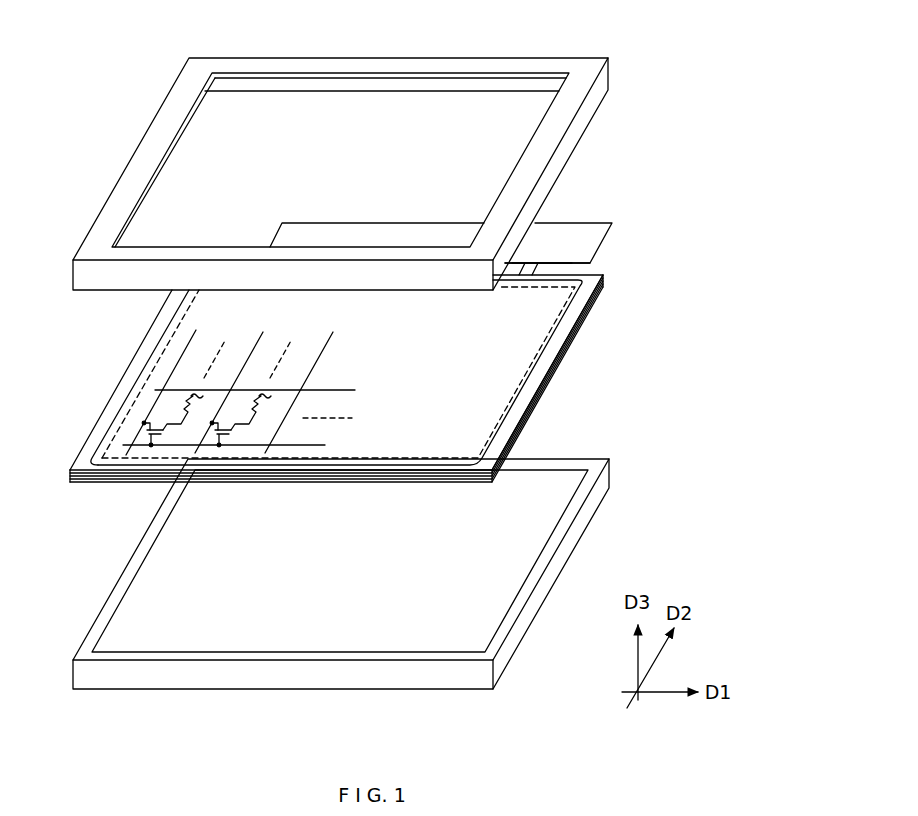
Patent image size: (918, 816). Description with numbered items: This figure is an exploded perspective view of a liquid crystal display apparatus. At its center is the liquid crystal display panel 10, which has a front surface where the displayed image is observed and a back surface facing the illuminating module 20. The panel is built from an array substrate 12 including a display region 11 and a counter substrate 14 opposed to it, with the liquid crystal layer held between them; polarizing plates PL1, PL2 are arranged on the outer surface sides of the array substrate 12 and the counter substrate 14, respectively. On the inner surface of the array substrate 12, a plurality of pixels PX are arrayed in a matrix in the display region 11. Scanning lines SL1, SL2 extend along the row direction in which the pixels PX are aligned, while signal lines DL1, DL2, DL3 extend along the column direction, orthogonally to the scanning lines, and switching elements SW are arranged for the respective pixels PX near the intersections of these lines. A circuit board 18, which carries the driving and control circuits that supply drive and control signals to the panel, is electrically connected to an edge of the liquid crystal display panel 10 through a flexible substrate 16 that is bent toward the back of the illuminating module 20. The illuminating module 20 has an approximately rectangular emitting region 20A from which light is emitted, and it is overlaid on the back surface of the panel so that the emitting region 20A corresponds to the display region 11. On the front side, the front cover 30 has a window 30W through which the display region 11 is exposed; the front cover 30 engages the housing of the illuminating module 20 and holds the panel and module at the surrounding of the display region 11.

The front cover 30 is at (635, 90).
The window 30W is at (455, 107).
The liquid crystal display panel 10 is at (362, 355).
The display region 11 is at (497, 427).
The array substrate 12 is at (85, 482).
The counter substrate 14 is at (85, 463).
The flexible substrate 16 is at (608, 266).
The circuit board 18 is at (583, 221).
The polarizing plate PL1 is at (123, 483).
The polarizing plate PL2 is at (112, 409).
The pixel PX is at (166, 396).
The switching element SW is at (148, 425).
The signal line DL1 is at (197, 332).
The signal line DL2 is at (263, 334).
The signal line DL3 is at (334, 335).
The scanning line SL1 is at (326, 445).
The scanning line SL2 is at (356, 390).
The illuminating module 20 is at (387, 593).
The emitting region 20A is at (207, 636).